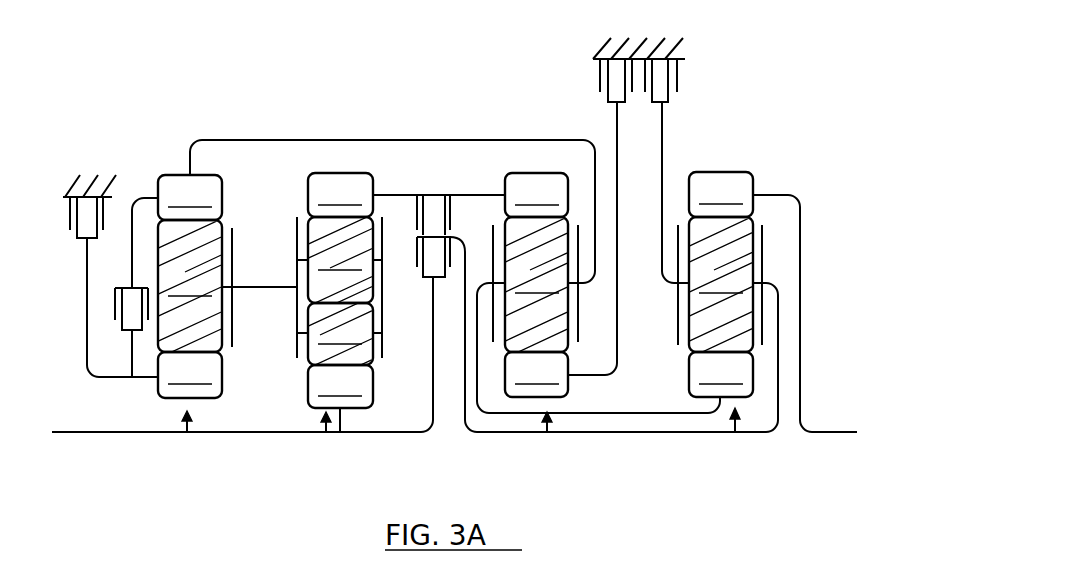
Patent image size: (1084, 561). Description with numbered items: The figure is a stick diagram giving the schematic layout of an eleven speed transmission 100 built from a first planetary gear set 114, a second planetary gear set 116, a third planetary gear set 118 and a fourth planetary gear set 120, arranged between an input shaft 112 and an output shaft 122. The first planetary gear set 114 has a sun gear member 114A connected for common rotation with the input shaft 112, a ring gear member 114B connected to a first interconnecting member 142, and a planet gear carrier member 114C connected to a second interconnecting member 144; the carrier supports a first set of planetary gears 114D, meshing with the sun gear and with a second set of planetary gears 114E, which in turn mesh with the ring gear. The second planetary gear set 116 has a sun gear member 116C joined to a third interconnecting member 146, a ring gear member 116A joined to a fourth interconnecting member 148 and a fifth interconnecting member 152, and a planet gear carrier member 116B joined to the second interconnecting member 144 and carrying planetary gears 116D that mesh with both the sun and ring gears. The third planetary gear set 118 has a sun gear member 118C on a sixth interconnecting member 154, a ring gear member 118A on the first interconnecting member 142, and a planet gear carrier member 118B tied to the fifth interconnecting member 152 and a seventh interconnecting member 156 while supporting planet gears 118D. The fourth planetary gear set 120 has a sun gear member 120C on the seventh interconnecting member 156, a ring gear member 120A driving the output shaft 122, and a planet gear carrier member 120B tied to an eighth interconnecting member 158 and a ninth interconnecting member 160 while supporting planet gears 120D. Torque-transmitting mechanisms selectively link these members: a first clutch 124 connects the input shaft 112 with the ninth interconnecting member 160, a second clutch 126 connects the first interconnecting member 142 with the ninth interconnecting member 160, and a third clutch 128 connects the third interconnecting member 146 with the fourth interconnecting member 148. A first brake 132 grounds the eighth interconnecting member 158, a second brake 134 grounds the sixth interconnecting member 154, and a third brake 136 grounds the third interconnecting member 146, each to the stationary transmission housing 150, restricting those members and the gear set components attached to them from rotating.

The eleven speed transmission 100 is at (758, 54).
The input shaft 112 is at (75, 440).
The first planetary gear set 114 is at (341, 337).
The sun gear member 114A is at (340, 386).
The ring gear member 114B is at (340, 195).
The planet gear carrier member 114C is at (385, 327).
The first set of planetary gears 114D is at (341, 338).
The second set of planetary gears 114E is at (341, 265).
The second planetary gear set 116 is at (191, 338).
The ring gear member 116A is at (190, 197).
The planet gear carrier member 116B is at (234, 246).
The sun gear member 116C is at (190, 375).
The planetary gears 116D is at (191, 292).
The third planetary gear set 118 is at (539, 337).
The ring gear member 118A is at (536, 195).
The planet gear carrier member 118B is at (577, 330).
The sun gear member 118C is at (536, 374).
The planet gears 118D is at (537, 292).
The fourth planetary gear set 120 is at (724, 336).
The ring gear member 120A is at (721, 194).
The planet gear carrier member 120B is at (763, 255).
The sun gear member 120C is at (721, 374).
The planet gears 120D is at (721, 292).
The output shaft 122 is at (827, 433).
The first clutch 124 is at (416, 278).
The second clutch 126 is at (415, 212).
The third clutch 128 is at (115, 300).
The first brake 132 is at (678, 82).
The second brake 134 is at (600, 80).
The third brake 136 is at (69, 218).
The first interconnecting member 142 is at (470, 195).
The second interconnecting member 144 is at (263, 290).
The third interconnecting member 146 is at (85, 350).
The fourth interconnecting member 148 is at (154, 197).
The transmission housing 150 is at (72, 182).
The fifth interconnecting member 152 is at (300, 138).
The sixth interconnecting member 154 is at (615, 137).
The seventh interconnecting member 156 is at (632, 415).
The eighth interconnecting member 158 is at (665, 140).
The ninth interconnecting member 160 is at (497, 438).